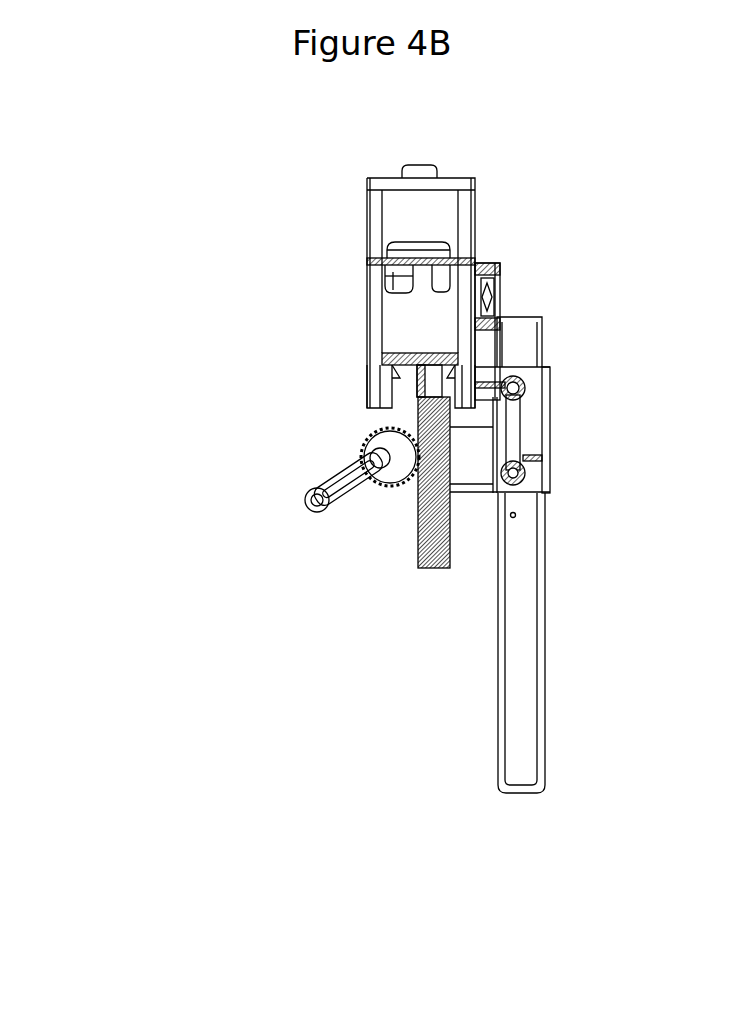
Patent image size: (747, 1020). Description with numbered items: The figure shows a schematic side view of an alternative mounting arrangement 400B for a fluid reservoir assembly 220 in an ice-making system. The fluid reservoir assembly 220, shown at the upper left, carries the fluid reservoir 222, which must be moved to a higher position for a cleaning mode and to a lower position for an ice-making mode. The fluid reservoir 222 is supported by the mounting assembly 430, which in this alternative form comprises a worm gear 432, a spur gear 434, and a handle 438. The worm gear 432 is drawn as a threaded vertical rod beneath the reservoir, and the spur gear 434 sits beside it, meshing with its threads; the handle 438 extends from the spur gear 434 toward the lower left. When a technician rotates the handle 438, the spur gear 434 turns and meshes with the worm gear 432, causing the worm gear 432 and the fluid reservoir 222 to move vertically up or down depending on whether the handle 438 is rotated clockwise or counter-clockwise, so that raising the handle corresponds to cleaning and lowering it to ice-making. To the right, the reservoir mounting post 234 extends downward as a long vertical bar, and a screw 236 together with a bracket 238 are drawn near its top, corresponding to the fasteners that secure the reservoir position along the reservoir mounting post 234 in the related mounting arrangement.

The ice-making fluid system 400B is at (538, 108).
The fluid reservoir assembly 220 is at (302, 410).
The fluid reservoir 222 is at (367, 226).
The mounting assembly 430 is at (570, 803).
The reservoir mounting post 234 is at (545, 707).
The screw 236 is at (527, 373).
The bracket 238 is at (520, 425).
The worm gear 432 is at (447, 568).
The spur gear 434 is at (363, 440).
The handle 438 is at (342, 500).